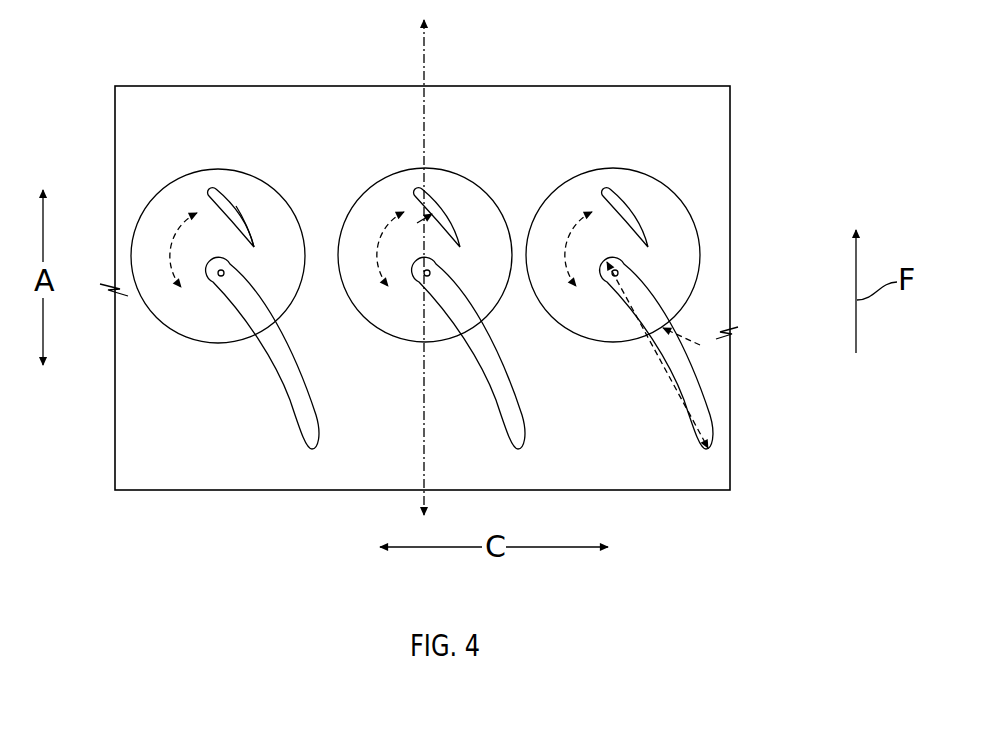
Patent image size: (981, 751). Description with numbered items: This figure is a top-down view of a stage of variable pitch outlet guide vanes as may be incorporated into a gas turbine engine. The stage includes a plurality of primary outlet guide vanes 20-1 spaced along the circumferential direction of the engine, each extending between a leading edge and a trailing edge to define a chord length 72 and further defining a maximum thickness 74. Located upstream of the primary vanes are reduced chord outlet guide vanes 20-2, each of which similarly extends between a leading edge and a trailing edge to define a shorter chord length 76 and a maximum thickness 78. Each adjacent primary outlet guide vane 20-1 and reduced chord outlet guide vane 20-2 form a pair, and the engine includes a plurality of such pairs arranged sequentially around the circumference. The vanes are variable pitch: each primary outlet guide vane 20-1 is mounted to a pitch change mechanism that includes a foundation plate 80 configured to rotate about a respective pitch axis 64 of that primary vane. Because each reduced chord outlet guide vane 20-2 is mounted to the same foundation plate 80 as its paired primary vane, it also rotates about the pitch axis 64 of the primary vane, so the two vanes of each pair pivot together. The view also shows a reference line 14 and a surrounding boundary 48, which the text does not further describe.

The central axis 14 is at (425, 73).
The primary outlet guide vanes 20-1 is at (497, 358).
The reduced chord outlet guide vanes 20-2 is at (225, 197).
The housing panel 48 is at (708, 170).
The pitch axis 64 is at (221, 279).
The chord length 72 is at (627, 297).
The maximum thickness 74 is at (687, 326).
The chord length 76 is at (248, 227).
The maximum thickness 78 is at (446, 205).
The foundation plate 80 is at (173, 315).